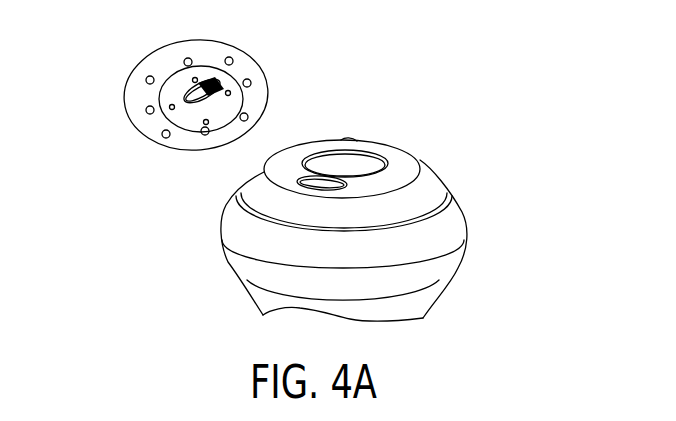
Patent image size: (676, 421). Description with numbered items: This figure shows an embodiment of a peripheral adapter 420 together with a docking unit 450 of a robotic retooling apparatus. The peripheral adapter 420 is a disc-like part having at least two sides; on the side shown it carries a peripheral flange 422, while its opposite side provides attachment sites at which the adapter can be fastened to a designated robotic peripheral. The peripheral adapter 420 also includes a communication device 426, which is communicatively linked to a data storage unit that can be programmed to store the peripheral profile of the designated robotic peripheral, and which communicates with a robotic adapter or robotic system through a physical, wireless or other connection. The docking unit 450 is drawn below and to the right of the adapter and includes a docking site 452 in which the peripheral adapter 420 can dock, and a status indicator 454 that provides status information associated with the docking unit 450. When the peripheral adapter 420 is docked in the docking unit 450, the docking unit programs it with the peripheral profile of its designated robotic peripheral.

The peripheral adapter 420 is at (143, 63).
The peripheral flange 422 is at (190, 128).
The communication device 426 is at (214, 82).
The docking unit 450 is at (222, 212).
The docking site 452 is at (381, 153).
The status indicator 454 is at (440, 180).